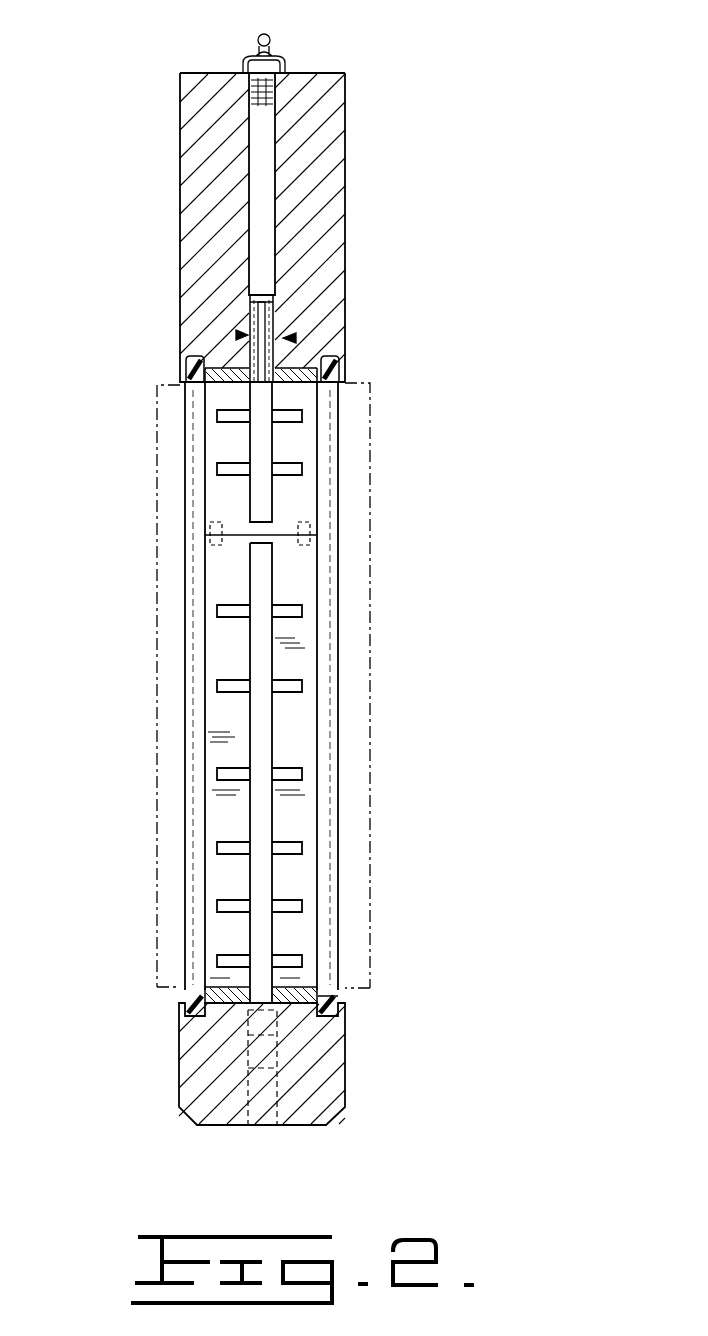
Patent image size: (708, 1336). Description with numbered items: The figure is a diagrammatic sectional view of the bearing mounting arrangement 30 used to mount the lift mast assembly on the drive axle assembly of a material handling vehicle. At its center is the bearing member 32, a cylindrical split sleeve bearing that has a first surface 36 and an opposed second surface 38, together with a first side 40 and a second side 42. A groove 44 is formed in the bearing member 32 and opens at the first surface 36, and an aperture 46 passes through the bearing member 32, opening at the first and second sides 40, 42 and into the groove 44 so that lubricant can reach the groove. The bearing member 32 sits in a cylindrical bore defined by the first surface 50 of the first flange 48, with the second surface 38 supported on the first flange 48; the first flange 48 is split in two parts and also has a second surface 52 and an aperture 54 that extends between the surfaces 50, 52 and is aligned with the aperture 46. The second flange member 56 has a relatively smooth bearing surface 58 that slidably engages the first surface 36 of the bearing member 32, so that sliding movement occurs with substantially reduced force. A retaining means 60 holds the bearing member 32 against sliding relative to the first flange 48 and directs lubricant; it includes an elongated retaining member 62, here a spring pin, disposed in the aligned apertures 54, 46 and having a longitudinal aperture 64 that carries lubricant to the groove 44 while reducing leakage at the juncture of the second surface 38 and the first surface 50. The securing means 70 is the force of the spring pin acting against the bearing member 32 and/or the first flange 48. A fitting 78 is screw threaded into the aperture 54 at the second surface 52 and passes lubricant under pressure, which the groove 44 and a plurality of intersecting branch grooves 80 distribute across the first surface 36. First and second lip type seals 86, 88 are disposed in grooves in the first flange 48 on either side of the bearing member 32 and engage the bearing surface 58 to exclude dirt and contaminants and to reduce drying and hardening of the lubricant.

The bearing mounting arrangement 30 is at (428, 769).
The bearing member 32 is at (305, 590).
The first surface 36 is at (302, 408).
The second surface 38 is at (343, 348).
The first side 40 is at (188, 468).
The second side 42 is at (318, 495).
The groove 44 is at (266, 450).
The aperture 46 is at (258, 398).
The first flange 48 is at (338, 247).
The first surface 50 is at (215, 406).
The second surface 52 is at (335, 73).
The aperture 54 is at (270, 195).
The second flange member 56 is at (370, 722).
The bearing surface 58 is at (157, 992).
The retaining means 60 is at (292, 337).
The elongated retaining member 62 is at (272, 320).
The aperture 64 is at (257, 306).
The securing means 70 is at (240, 334).
The fitting 78 is at (273, 54).
The branch grooves 80 is at (300, 673).
The first lip type seal 86 is at (180, 1005).
The second lip type seal 88 is at (334, 1000).